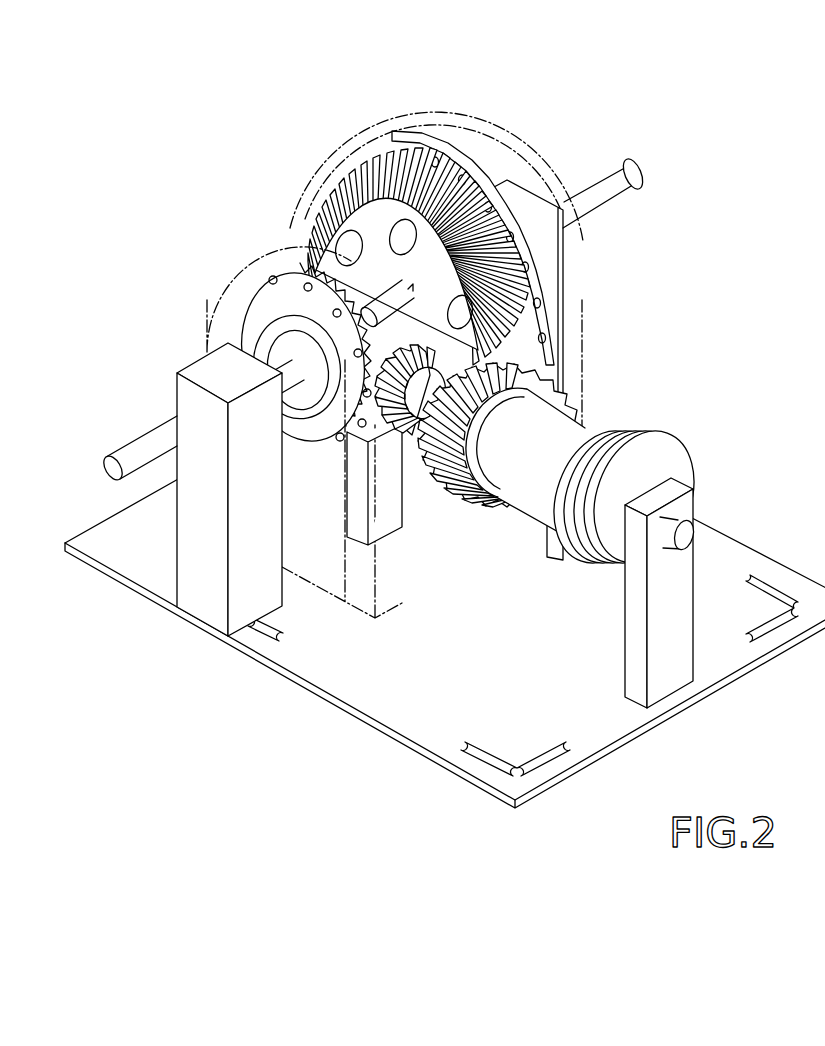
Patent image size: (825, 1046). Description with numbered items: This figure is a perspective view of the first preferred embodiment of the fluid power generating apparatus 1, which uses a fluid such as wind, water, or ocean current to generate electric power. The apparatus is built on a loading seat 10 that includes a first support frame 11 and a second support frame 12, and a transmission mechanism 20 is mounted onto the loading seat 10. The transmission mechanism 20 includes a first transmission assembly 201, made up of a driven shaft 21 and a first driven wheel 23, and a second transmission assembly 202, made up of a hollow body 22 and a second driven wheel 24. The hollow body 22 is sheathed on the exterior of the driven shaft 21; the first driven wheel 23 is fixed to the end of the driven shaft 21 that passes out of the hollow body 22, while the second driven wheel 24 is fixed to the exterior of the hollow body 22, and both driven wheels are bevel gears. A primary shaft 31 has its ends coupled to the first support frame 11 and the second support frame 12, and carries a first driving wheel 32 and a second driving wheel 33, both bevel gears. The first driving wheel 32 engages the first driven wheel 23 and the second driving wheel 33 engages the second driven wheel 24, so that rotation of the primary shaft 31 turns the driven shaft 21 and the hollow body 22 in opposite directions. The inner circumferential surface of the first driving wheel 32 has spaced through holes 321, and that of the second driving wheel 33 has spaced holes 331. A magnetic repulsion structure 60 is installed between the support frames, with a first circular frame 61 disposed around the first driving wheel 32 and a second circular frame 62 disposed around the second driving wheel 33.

The fluid power generating apparatus 1 is at (445, 430).
The loading seat 10 is at (180, 613).
The first support frame 11 is at (530, 185).
The second support frame 12 is at (190, 395).
The transmission mechanism 20 is at (529, 533).
The first transmission assembly 201 is at (419, 536).
The second transmission assembly 202 is at (501, 504).
The driven shaft 21 is at (612, 567).
The hollow body 22 is at (540, 490).
The first driven wheel 23 is at (383, 425).
The second driven wheel 24 is at (447, 497).
The primary shaft 31 is at (607, 193).
The first driving wheel 32 is at (255, 308).
The through holes 321 is at (272, 281).
The second driving wheel 33 is at (352, 180).
The holes 331 is at (447, 152).
The magnetic repulsion structure 60 is at (298, 185).
The first circular frame 61 is at (207, 332).
The second circular frame 62 is at (470, 137).